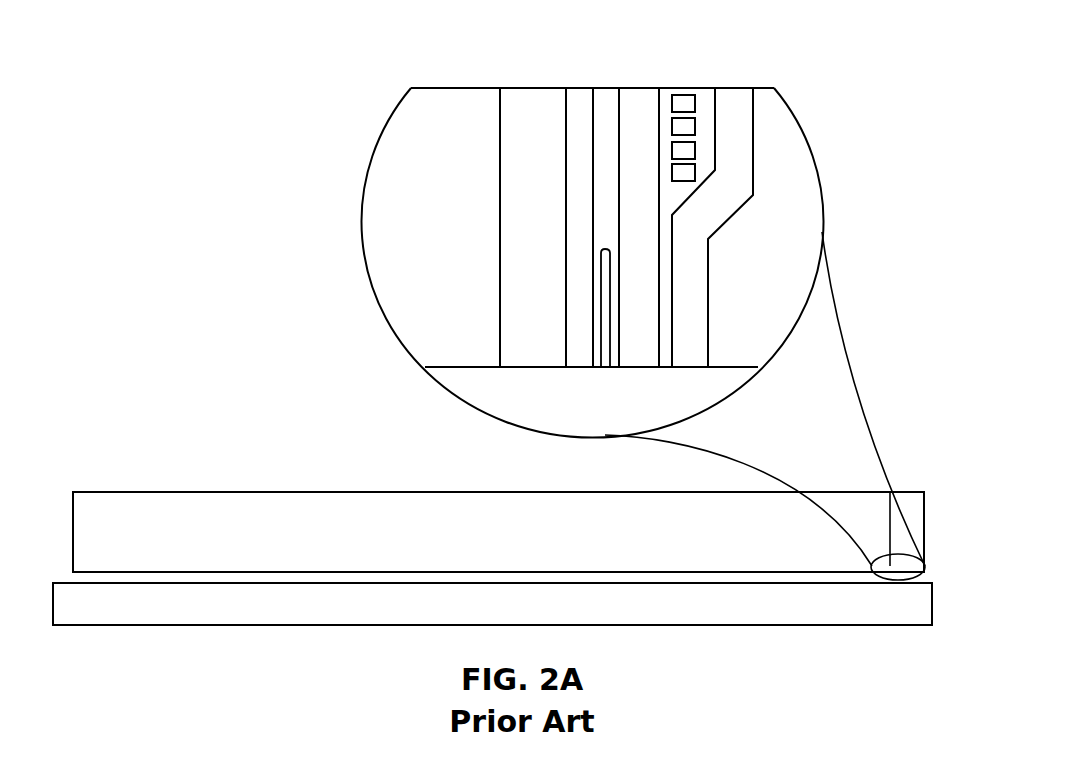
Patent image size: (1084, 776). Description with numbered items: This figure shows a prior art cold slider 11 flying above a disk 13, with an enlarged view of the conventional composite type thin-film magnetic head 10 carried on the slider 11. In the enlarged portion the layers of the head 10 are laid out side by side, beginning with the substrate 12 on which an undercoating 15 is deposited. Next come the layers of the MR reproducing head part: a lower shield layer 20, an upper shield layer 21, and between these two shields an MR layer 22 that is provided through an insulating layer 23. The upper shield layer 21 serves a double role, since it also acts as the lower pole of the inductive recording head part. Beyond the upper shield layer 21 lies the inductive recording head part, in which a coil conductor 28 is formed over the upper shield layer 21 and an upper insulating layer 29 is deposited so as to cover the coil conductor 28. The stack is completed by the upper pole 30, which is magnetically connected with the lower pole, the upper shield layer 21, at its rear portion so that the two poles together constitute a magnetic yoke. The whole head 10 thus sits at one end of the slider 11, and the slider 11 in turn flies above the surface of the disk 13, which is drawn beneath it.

The thin-film magnetic head 10 is at (366, 112).
The slider 11 is at (277, 492).
The substrate 12 is at (450, 98).
The disk 13 is at (262, 625).
The undercoating 15 is at (526, 98).
The lower shield layer 20 is at (577, 98).
The upper shield layer 21 is at (636, 98).
The MR layer 22 is at (605, 368).
The insulating layer 23 is at (608, 98).
The coil conductor 28 is at (681, 98).
The upper insulating layer 29 is at (708, 98).
The upper pole 30 is at (741, 98).